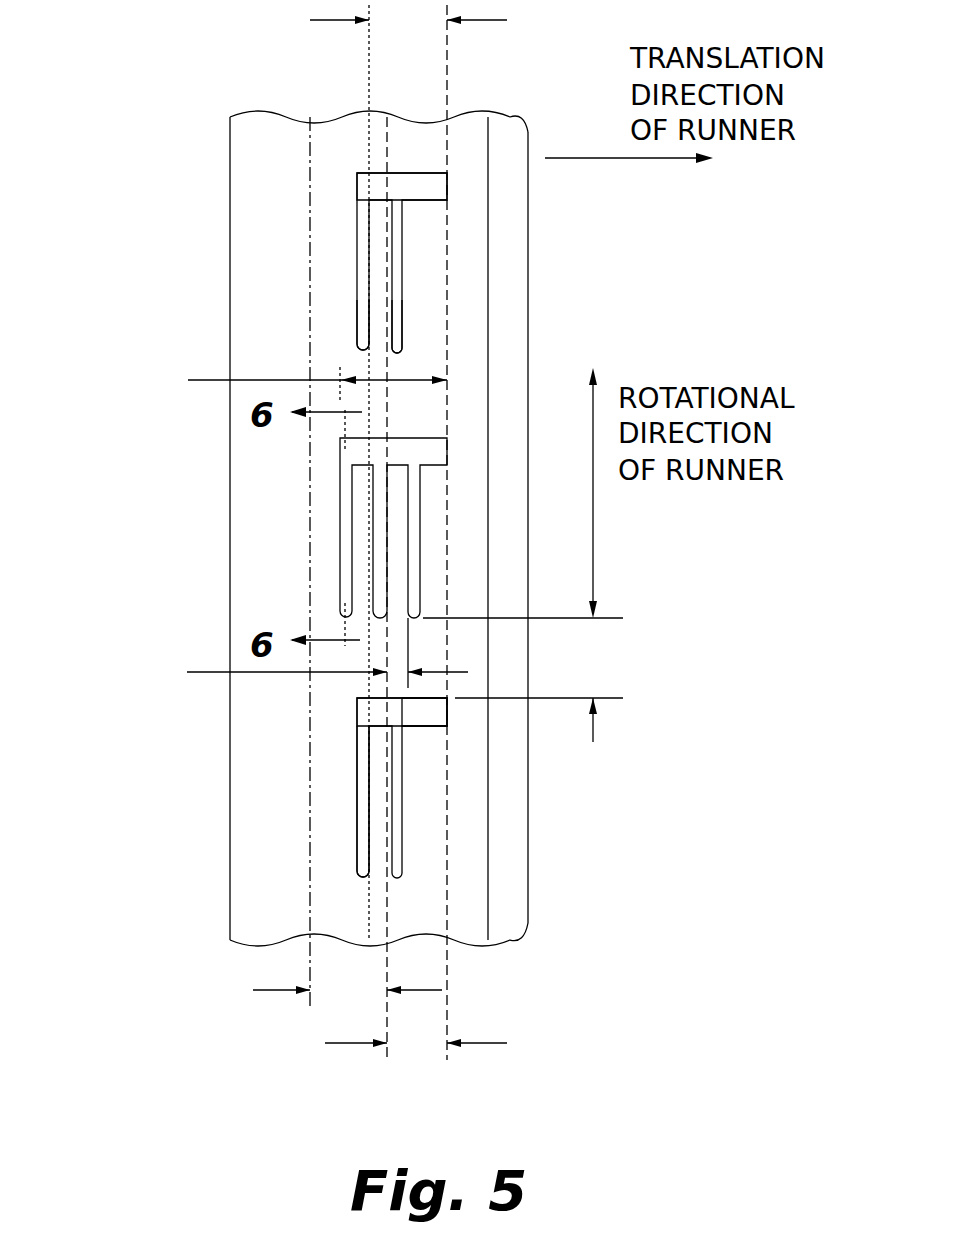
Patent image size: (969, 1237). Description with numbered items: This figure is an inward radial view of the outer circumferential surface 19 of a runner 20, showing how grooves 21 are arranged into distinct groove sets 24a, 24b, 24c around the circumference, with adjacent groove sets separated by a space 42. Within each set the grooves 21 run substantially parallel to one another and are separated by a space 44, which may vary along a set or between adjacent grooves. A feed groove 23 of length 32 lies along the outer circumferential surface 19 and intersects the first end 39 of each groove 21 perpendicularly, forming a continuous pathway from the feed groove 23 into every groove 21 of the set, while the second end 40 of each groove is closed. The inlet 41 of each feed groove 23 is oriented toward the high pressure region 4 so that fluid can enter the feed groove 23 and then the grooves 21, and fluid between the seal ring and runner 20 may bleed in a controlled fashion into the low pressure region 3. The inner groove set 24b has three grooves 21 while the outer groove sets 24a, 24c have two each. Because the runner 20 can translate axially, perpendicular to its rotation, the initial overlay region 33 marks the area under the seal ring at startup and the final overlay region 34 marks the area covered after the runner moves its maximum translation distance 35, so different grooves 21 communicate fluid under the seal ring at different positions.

The low pressure region 3 is at (98, 185).
The high pressure region 4 is at (646, 228).
The outer circumferential surface 19 is at (473, 130).
The runner 20 is at (200, 922).
The grooves 21 is at (365, 338).
The feed groove 23 is at (403, 188).
The groove set 24a is at (357, 752).
The groove set 24b is at (340, 527).
The groove set 24c is at (357, 227).
The length 32 is at (295, 383).
The initial overlay region 33 is at (408, 20).
The final overlay region 34 is at (347, 991).
The maximum translation distance 35 is at (416, 1044).
The first end 39 is at (357, 728).
The second end 40 is at (357, 875).
The inlet 41 is at (430, 713).
The space 42 is at (523, 680).
The space 44 is at (305, 673).